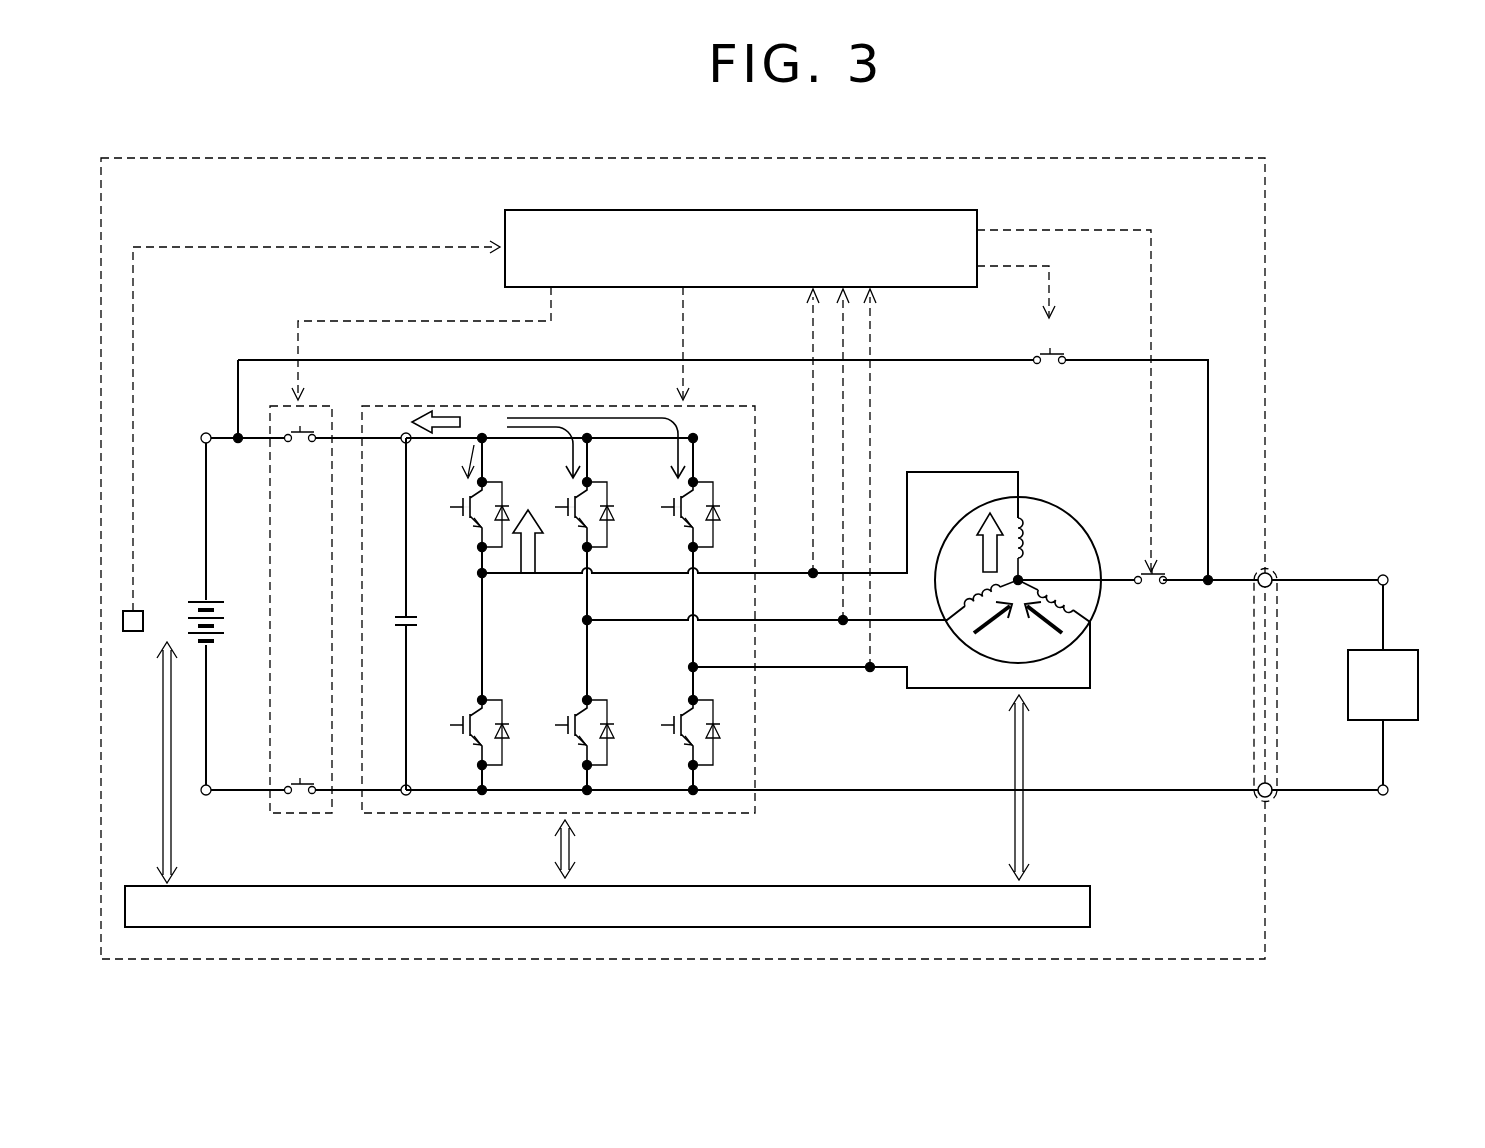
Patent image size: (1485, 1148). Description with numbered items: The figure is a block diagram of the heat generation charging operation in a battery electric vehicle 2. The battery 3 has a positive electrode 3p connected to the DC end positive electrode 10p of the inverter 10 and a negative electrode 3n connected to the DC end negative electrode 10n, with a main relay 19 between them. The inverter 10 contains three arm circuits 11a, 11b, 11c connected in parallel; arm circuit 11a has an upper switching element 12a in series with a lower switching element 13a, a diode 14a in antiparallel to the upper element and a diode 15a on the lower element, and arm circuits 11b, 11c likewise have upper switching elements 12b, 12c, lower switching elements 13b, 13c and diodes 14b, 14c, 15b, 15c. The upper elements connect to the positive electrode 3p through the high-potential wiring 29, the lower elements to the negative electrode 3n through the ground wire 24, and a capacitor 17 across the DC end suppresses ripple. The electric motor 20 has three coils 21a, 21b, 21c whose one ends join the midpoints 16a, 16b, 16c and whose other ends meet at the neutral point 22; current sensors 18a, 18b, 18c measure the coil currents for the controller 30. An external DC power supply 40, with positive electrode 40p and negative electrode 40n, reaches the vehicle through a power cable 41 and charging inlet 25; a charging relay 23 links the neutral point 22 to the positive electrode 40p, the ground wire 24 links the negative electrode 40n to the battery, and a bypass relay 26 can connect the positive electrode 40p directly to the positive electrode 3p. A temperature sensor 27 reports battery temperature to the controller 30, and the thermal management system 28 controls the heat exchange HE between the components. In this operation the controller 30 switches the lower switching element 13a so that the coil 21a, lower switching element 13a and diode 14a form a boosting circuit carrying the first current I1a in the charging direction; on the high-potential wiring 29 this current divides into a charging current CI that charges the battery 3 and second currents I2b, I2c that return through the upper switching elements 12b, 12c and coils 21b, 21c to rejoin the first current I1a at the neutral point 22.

The battery electric vehicle 2 is at (1218, 154).
The battery 3 is at (215, 603).
The positive electrode 3p is at (207, 432).
The negative electrode 3n is at (207, 797).
The inverter 10 is at (757, 445).
The DC end positive electrode 10p is at (405, 432).
The DC end negative electrode 10n is at (408, 797).
The arm circuit 11a is at (466, 460).
The arm circuit 11b is at (575, 500).
The arm circuit 11c is at (682, 500).
The upper switching element 12a is at (468, 510).
The upper switching element 12b is at (573, 510).
The upper switching element 12c is at (679, 510).
The lower switching element 13a is at (468, 730).
The lower switching element 13b is at (573, 730).
The lower switching element 13c is at (679, 730).
The diode 14a is at (503, 512).
The diode 14b is at (608, 512).
The diode 14c is at (714, 512).
The diode 15a is at (503, 730).
The diode 15b is at (608, 730).
The diode 15c is at (714, 730).
The midpoint 16a is at (480, 578).
The midpoint 16b is at (592, 620).
The midpoint 16c is at (690, 665).
The capacitor 17 is at (412, 630).
The current sensor 18a is at (813, 580).
The current sensor 18b is at (843, 628).
The current sensor 18c is at (871, 675).
The main relay 19 is at (300, 815).
The electric motor 20 is at (1056, 522).
The coil 21a is at (1030, 530).
The coil 21b is at (960, 650).
The coil 21c is at (1070, 605).
The neutral point 22 is at (1024, 577).
The charging relay 23 is at (1160, 575).
The ground wire 24 is at (1092, 795).
The charging inlet 25 is at (1272, 575).
The bypass relay 26 is at (1057, 352).
The temperature sensor 27 is at (137, 610).
The thermal management system 28 is at (1092, 906).
The high-potential wiring 29 is at (452, 440).
The controller 30 is at (930, 209).
The external DC power supply 40 is at (1418, 660).
The positive electrode 40p is at (1384, 575).
The negative electrode 40n is at (1384, 797).
The power cable 41 is at (1333, 584).
The charging current CI is at (438, 413).
The first current I1a is at (978, 570).
The second current I2b is at (990, 648).
The second current I2c is at (1080, 652).
The heat exchange HE is at (158, 790).